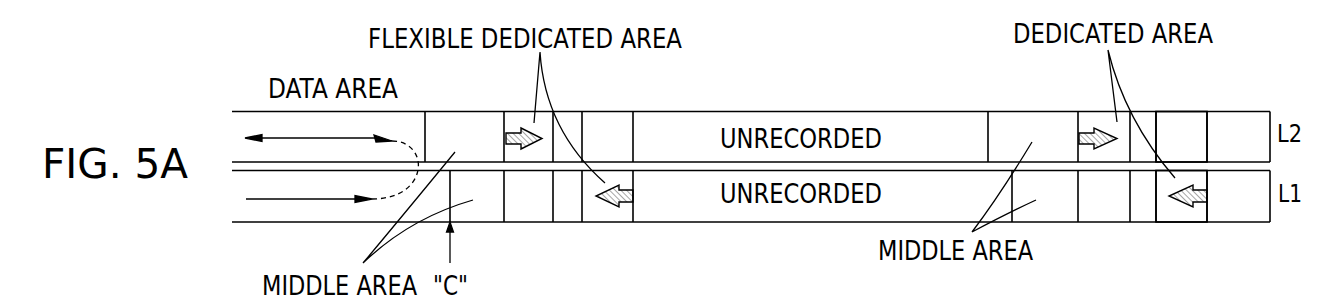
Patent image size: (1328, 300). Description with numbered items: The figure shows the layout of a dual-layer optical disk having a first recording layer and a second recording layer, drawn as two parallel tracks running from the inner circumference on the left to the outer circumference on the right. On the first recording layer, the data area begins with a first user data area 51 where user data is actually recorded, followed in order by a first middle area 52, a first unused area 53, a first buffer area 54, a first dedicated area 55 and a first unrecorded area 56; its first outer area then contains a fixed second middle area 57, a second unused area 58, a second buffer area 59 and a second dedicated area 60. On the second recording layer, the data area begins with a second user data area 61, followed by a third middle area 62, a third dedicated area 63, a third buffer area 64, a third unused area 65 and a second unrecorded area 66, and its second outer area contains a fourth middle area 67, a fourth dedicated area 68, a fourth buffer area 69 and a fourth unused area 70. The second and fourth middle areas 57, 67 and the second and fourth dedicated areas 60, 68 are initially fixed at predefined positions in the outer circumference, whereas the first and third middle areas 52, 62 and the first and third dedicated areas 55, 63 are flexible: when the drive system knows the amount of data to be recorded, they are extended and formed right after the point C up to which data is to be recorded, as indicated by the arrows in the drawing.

The first user data area 51 is at (278, 210).
The first middle area 52 is at (483, 212).
The first unused area 53 is at (535, 212).
The first buffer area 54 is at (568, 212).
The first dedicated area 55 is at (613, 212).
The first unrecorded area 56 is at (698, 217).
The second middle area 57 is at (1053, 215).
The second unused area 58 is at (1097, 210).
The second buffer area 59 is at (1139, 210).
The second dedicated area 60 is at (1192, 215).
The second user data area 61 is at (336, 137).
The third middle area 62 is at (462, 120).
The third dedicated area 63 is at (518, 118).
The third buffer area 64 is at (578, 117).
The third unused area 65 is at (613, 118).
The second unrecorded area 66 is at (696, 123).
The fourth middle area 67 is at (998, 118).
The fourth dedicated area 68 is at (1102, 118).
The fourth buffer area 69 is at (1147, 125).
The fourth unused area 70 is at (1190, 125).